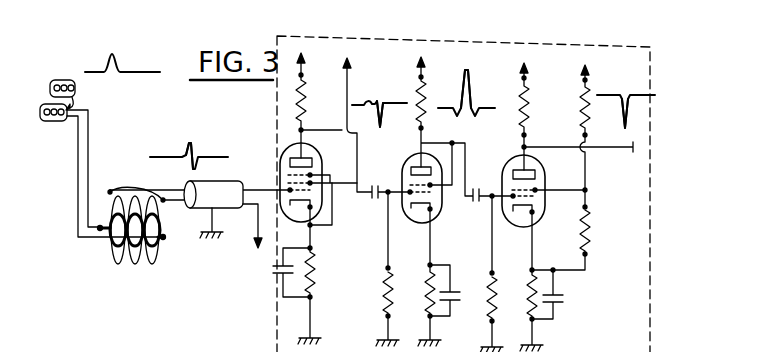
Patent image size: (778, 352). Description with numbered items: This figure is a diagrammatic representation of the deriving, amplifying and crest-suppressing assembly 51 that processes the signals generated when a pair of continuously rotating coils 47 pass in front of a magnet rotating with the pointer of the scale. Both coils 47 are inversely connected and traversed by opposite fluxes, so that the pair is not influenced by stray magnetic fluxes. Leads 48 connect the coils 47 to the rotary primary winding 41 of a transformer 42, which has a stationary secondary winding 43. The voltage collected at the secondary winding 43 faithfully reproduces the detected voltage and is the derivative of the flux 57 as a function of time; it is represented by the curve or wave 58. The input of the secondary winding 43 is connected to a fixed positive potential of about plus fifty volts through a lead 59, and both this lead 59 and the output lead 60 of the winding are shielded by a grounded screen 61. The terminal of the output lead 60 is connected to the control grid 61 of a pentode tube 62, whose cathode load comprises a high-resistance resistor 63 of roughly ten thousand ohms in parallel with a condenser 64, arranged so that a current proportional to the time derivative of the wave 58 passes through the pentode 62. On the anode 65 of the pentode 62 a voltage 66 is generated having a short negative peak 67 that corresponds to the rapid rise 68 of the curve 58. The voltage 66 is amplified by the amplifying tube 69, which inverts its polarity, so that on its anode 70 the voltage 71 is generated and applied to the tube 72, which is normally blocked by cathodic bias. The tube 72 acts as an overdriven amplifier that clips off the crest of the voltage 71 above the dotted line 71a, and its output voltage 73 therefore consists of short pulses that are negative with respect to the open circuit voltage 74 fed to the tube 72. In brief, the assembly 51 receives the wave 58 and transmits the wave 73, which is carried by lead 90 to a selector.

The rotary primary winding 41 is at (114, 247).
The transformer 42 is at (157, 248).
The stationary secondary winding 43 is at (130, 266).
The coils 47 is at (52, 125).
The leads 48 is at (88, 173).
The assembly 51 is at (478, 40).
The flux 57 is at (121, 65).
The curve or wave 58 is at (189, 161).
The lead 59 is at (250, 208).
The output lead 60 is at (253, 189).
The grounded screen 61 is at (200, 208).
The pentode tube 62 is at (287, 145).
The resistor 63 is at (319, 295).
The condenser 64 is at (277, 275).
The anode 65 is at (289, 160).
The voltage 66 is at (382, 101).
The short negative peak 67 is at (374, 121).
The rapid rise 68 is at (183, 148).
The amplifying tube 69 is at (409, 223).
The anode 70 is at (411, 170).
The voltage 71 is at (452, 103).
The dotted line 71a is at (471, 92).
The tube 72 is at (508, 163).
The output voltage 73 is at (612, 93).
The open circuit voltage 74 is at (641, 101).
The lead 90 is at (614, 151).